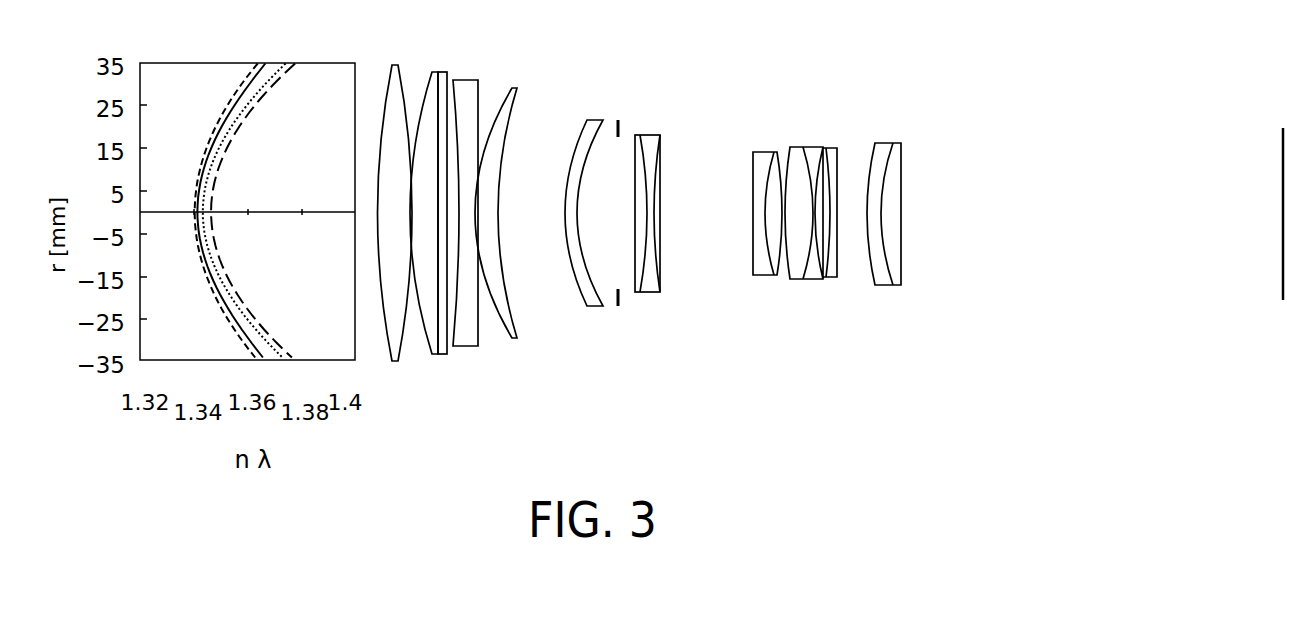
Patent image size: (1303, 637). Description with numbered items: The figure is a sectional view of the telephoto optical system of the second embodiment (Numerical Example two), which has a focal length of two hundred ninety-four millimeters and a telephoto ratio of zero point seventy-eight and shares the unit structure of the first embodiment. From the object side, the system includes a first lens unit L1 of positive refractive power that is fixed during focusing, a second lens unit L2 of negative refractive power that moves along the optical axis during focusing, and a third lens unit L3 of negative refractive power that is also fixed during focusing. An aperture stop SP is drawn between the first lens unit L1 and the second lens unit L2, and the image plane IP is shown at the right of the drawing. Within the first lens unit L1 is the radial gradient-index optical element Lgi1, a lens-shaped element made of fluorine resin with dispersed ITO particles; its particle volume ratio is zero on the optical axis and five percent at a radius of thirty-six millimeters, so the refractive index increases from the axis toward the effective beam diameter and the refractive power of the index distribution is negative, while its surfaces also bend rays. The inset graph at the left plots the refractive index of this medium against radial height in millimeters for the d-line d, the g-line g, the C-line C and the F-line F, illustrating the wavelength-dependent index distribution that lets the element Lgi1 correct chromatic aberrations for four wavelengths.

The first lens unit L1 is at (495, 227).
The second lens unit L2 is at (640, 387).
The third lens unit L3 is at (752, 388).
The radial gradient-index optical element Lgi1 is at (447, 72).
The aperture stop SP is at (621, 197).
The image plane IP is at (1283, 196).
The refractive index curve for d-line d is at (267, 70).
The refractive index curve for g-line g is at (256, 211).
The refractive index curve for C-line C is at (226, 211).
The refractive index curve for F-line F is at (278, 350).